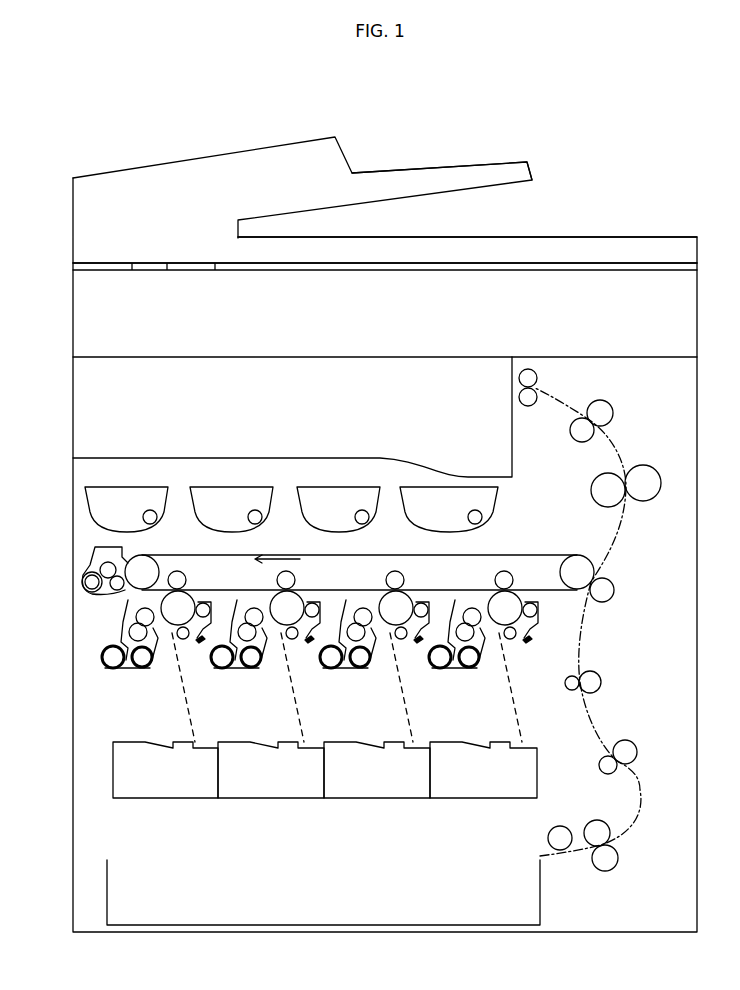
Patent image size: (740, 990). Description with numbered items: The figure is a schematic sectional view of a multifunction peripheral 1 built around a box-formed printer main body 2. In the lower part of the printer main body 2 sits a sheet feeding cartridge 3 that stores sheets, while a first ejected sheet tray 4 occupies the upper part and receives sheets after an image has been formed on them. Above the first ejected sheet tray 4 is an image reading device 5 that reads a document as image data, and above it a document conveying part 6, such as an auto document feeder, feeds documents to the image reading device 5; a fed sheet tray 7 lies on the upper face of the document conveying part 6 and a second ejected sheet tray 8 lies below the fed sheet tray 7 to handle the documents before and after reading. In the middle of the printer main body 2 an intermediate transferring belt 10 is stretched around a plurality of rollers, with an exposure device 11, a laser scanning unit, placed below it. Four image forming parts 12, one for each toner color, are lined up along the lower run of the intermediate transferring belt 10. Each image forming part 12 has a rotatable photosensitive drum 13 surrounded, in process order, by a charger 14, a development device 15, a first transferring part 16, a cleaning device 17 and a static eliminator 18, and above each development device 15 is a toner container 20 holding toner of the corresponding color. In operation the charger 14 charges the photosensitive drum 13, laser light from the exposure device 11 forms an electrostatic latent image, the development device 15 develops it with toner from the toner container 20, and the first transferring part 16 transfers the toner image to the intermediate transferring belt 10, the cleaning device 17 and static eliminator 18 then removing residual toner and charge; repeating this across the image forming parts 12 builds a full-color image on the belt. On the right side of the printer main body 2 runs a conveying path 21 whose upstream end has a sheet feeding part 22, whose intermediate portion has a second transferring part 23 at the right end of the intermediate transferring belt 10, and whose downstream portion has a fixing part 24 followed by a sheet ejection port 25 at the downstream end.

The multifunction peripheral 1 is at (78, 116).
The printer main body 2 is at (73, 500).
The sheet feeding cartridge 3 is at (107, 890).
The first ejected sheet tray 4 is at (378, 458).
The image reading device 5 is at (73, 290).
The document conveying part 6 is at (200, 158).
The fed sheet tray 7 is at (462, 166).
The second ejected sheet tray 8 is at (515, 237).
The intermediate transferring belt 10 is at (493, 555).
The exposure device 11 is at (105, 790).
The image forming part 12 is at (361, 634).
The photosensitive drum 13 is at (495, 575).
The charger 14 is at (514, 638).
The development device 15 is at (442, 675).
The first transferring part 16 is at (523, 583).
The cleaning device 17 is at (542, 618).
The static eliminator 18 is at (531, 643).
The toner container 20 is at (130, 478).
The conveying path 21 is at (577, 650).
The sheet feeding part 22 is at (634, 845).
The second transferring part 23 is at (612, 607).
The fixing part 24 is at (651, 500).
The sheet ejection port 25 is at (522, 388).